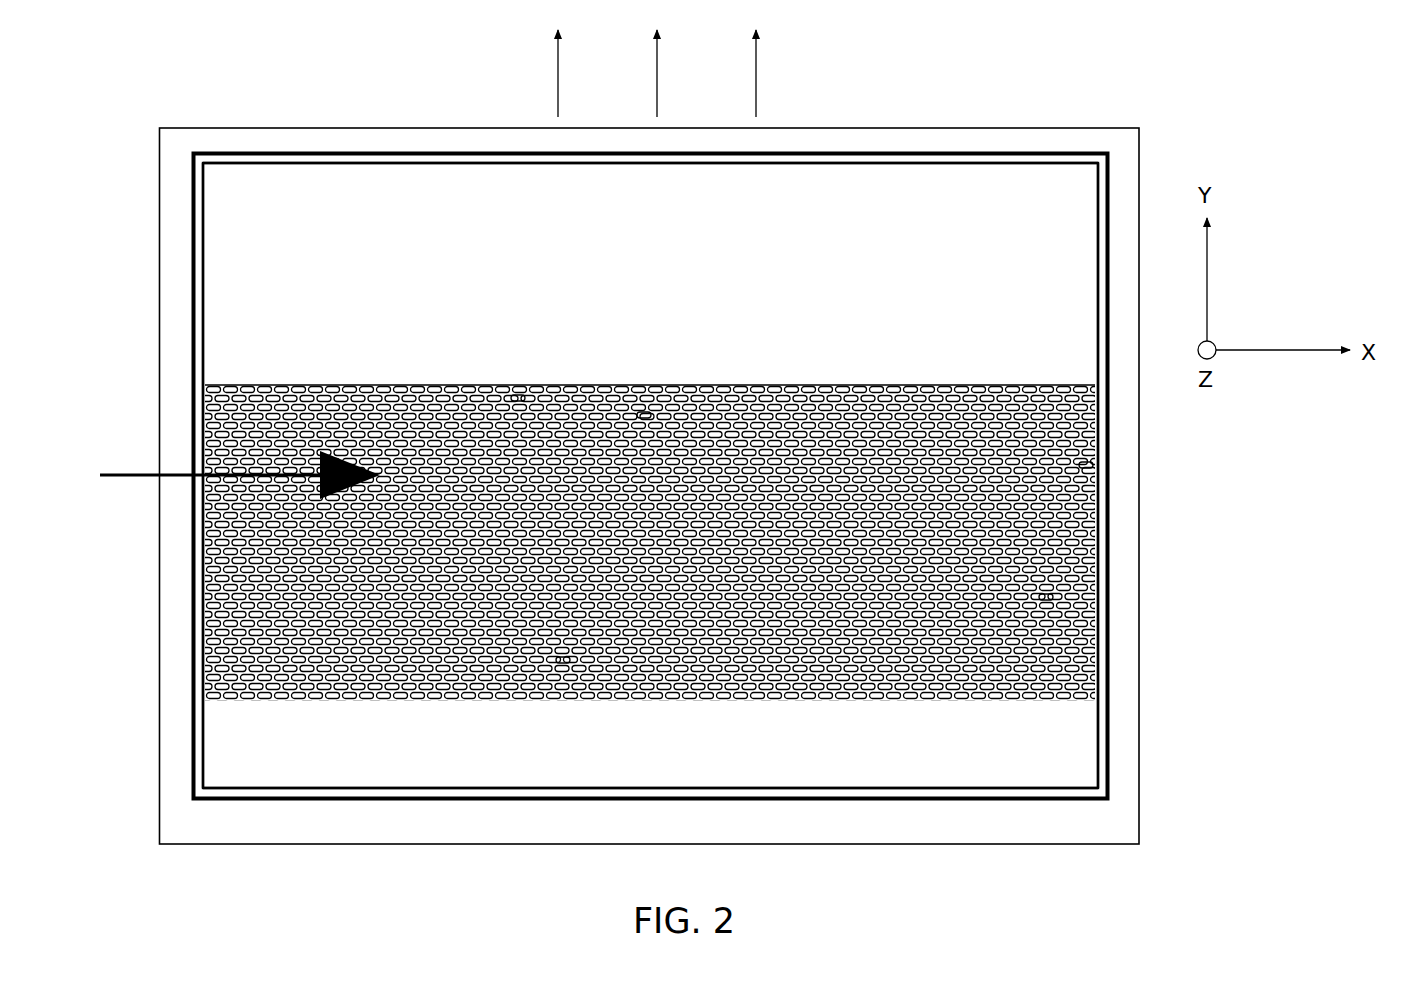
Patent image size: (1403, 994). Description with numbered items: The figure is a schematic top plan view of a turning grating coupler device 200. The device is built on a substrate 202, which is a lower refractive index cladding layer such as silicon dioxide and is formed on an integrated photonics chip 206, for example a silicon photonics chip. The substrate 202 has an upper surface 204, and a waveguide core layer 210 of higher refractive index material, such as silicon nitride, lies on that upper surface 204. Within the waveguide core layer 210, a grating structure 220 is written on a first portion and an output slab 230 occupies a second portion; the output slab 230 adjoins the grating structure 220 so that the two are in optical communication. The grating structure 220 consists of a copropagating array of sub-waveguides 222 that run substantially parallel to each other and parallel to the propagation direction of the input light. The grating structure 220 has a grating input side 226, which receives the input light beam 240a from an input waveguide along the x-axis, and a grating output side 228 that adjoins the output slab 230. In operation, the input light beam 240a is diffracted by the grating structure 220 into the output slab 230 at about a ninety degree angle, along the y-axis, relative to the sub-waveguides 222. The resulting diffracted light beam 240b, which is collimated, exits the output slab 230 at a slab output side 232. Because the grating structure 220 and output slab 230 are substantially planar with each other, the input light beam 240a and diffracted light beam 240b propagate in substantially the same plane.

The turning grating coupler device 200 is at (270, 77).
The substrate 202 is at (1104, 755).
The upper surface 204 is at (1005, 786).
The integrated photonics chip 206 is at (1139, 660).
The waveguide core layer 210 is at (1101, 552).
The grating structure 220 is at (305, 571).
The sub-waveguides 222 is at (644, 415).
The grating input side 226 is at (200, 432).
The grating output side 228 is at (402, 385).
The output slab 230 is at (265, 290).
The slab output side 232 is at (438, 163).
The input light beam 240a is at (108, 478).
The diffracted light beam 240b is at (757, 80).